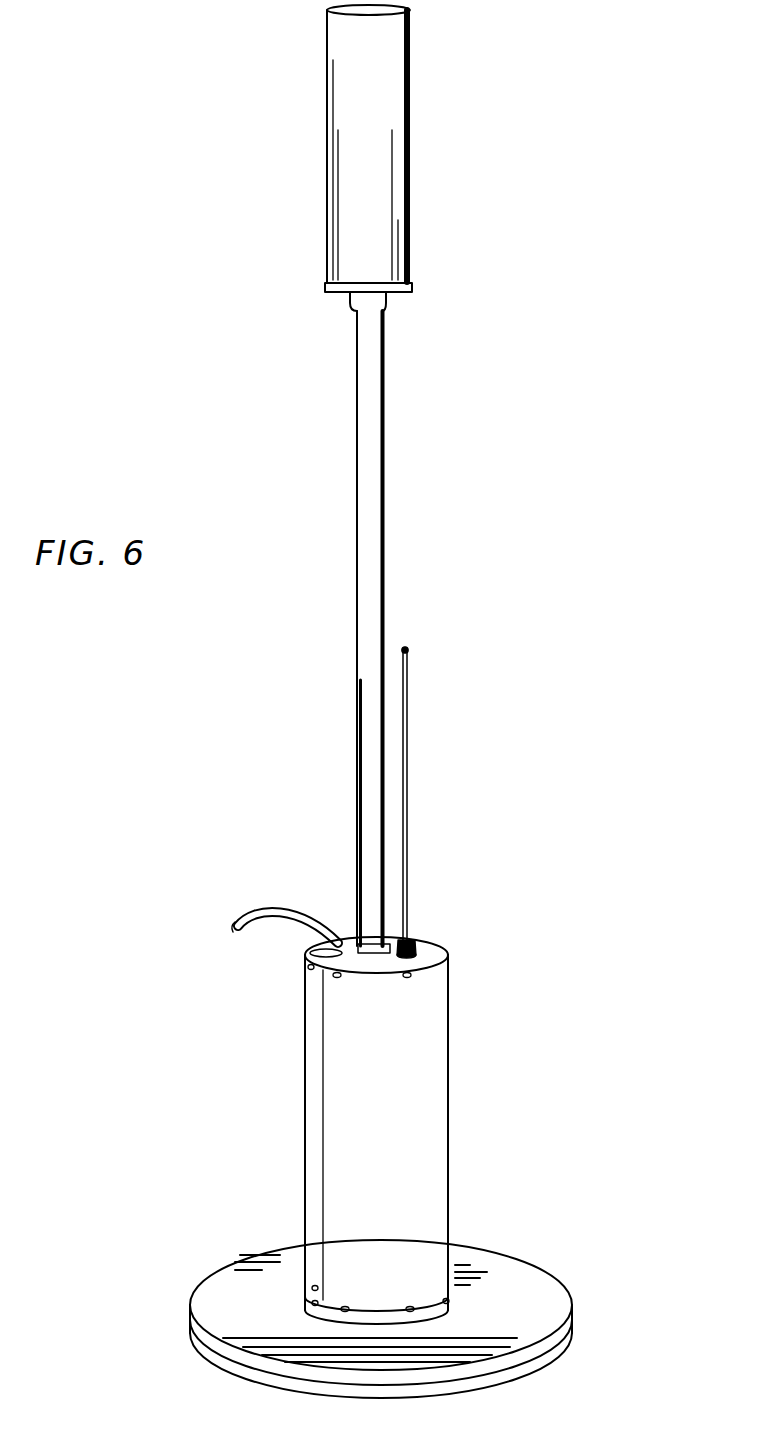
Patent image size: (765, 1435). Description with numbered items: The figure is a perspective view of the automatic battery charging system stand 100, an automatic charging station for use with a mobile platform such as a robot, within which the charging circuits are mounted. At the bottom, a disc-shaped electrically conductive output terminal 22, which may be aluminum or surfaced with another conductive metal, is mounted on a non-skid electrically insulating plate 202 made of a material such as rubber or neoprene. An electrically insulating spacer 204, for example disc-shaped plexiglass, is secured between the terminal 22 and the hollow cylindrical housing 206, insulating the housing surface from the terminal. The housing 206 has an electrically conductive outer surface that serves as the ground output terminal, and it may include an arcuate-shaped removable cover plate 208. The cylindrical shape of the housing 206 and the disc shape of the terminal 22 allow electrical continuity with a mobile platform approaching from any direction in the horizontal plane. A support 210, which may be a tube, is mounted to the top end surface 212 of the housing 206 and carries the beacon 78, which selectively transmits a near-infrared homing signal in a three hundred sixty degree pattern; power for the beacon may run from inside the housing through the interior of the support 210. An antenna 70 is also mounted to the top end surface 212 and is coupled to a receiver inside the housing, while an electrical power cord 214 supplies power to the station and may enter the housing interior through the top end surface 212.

The beacon 78 is at (411, 183).
The support 210 is at (383, 462).
The antenna 70 is at (407, 745).
The top end surface 212 is at (437, 947).
The electrical power cord 214 is at (280, 910).
The hollow cylindrical housing 206 is at (304, 1102).
The arcuate-shaped removable cover plate 208 is at (448, 1110).
The electrically insulating spacer 204 is at (452, 1296).
The electrically conductive output terminal 22 is at (548, 1272).
The non-skid electrically insulating plate 202 is at (565, 1345).
The automatic battery charging system stand 100 is at (512, 973).